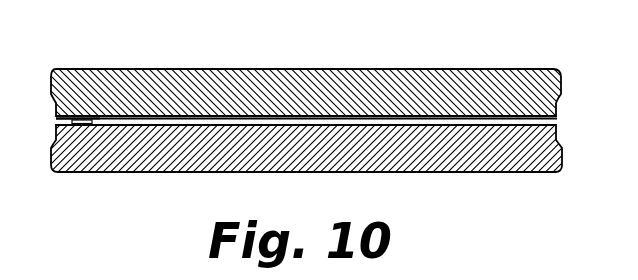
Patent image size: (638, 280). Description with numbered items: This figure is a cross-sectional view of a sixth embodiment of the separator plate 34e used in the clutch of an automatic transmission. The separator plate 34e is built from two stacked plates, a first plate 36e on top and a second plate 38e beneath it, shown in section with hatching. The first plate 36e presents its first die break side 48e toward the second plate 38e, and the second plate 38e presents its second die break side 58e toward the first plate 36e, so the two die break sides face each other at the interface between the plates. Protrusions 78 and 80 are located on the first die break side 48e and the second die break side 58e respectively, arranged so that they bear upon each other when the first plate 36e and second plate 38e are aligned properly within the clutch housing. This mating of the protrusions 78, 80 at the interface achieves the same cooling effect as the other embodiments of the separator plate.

The separator plate 34e is at (315, 115).
The first plate 36e is at (323, 70).
The second plate 38e is at (463, 160).
The first die break side 48e is at (180, 116).
The second die break side 58e is at (163, 125).
The protrusion 78 is at (83, 116).
The protrusion 80 is at (83, 125).